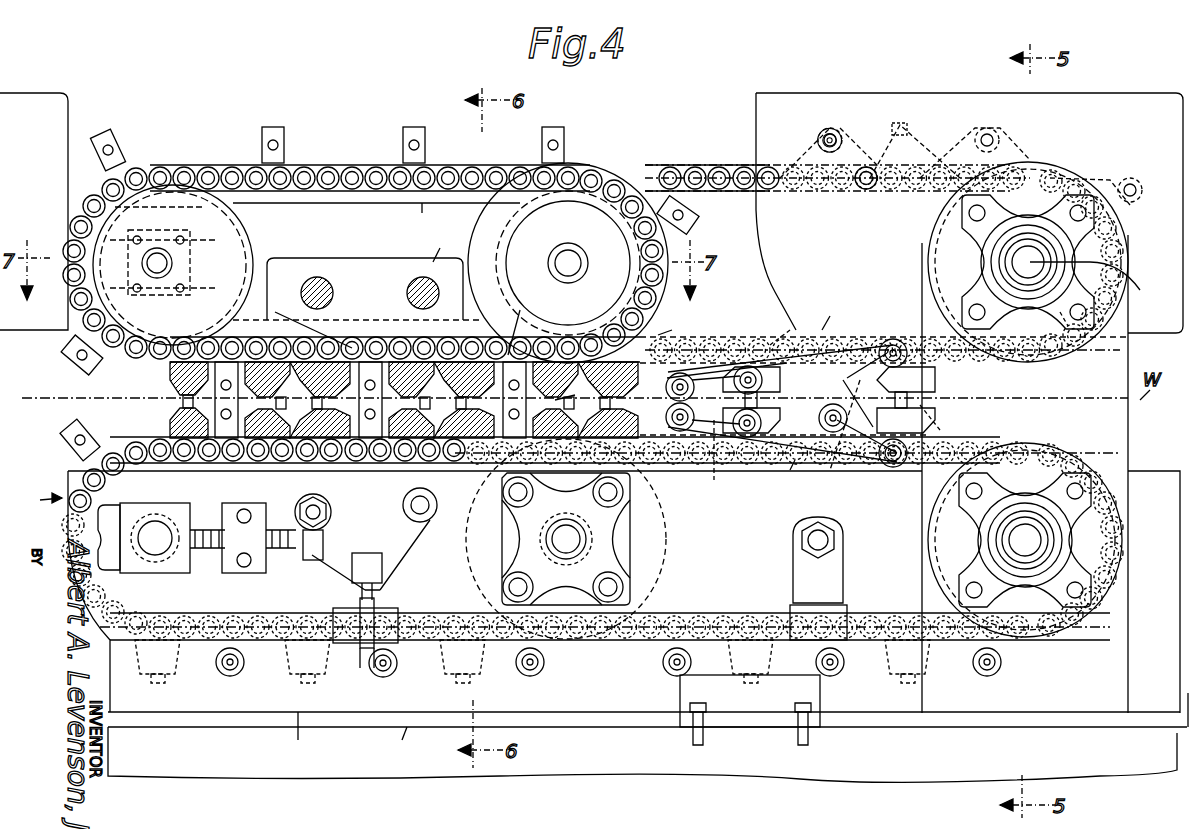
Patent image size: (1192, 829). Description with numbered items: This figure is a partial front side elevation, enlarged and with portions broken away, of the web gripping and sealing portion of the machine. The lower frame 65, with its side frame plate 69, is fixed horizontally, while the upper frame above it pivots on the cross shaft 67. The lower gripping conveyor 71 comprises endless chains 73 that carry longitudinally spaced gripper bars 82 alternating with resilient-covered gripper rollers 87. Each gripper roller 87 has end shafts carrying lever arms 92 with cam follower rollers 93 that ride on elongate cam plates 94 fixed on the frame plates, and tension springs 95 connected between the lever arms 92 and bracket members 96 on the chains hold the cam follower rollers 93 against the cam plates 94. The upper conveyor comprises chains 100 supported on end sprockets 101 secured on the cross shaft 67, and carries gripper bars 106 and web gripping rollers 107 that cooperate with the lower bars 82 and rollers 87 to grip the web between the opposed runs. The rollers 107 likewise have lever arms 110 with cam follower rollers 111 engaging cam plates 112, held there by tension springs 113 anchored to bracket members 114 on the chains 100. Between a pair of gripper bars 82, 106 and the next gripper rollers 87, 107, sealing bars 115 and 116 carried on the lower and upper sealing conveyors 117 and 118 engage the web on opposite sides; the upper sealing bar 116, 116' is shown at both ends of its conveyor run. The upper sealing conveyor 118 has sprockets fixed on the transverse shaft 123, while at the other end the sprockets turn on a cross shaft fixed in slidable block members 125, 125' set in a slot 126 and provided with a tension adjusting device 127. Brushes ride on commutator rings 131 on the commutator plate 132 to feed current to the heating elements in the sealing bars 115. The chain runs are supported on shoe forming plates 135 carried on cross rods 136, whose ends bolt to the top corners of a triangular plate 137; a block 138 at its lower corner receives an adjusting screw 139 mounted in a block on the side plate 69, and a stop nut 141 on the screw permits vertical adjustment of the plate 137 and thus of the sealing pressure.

The lower frame 65 is at (410, 741).
The cross shaft 67 is at (1100, 281).
The side frame plate 69 is at (293, 734).
The lower gripping conveyor 71 is at (440, 410).
The chain 73 is at (901, 594).
The gripper bar 82 is at (1092, 436).
The gripper roller 87 is at (1148, 448).
The lever arm 92 is at (1075, 410).
The cam follower roller 93 is at (934, 415).
The cam plate 94 is at (567, 390).
The tension spring 95 is at (668, 470).
The bracket member 96 is at (790, 479).
The chain 100 is at (706, 178).
The end sprocket 101 is at (1083, 178).
The gripper bar 106 is at (920, 142).
The web gripping roller 107 is at (762, 390).
The lever arm 110 is at (870, 345).
The cam follower roller 111 is at (666, 392).
The cam plate 112 is at (839, 313).
The tension spring 113 is at (820, 330).
The bracket member 114 is at (863, 321).
The sealing bar 115 is at (70, 460).
The sealing bar 116 is at (384, 251).
The mounting brackets 116' is at (408, 323).
The lower sealing conveyor 117 is at (39, 493).
The upper sealing conveyor 118 is at (78, 215).
The transverse shaft 123 is at (568, 252).
The block member 125 is at (208, 526).
The block member 125' is at (203, 261).
The slot 126 is at (112, 512).
The tension adjusting device 127 is at (310, 560).
The commutator ring 131 is at (425, 217).
The commutator plate 132 is at (223, 226).
The shoe forming plate 135 is at (445, 246).
The cross rod 136 is at (333, 293).
The triangular plate 137 is at (408, 530).
The block 138 is at (395, 576).
The adjusting screw 139 is at (358, 660).
The stop nut 141 is at (355, 605).